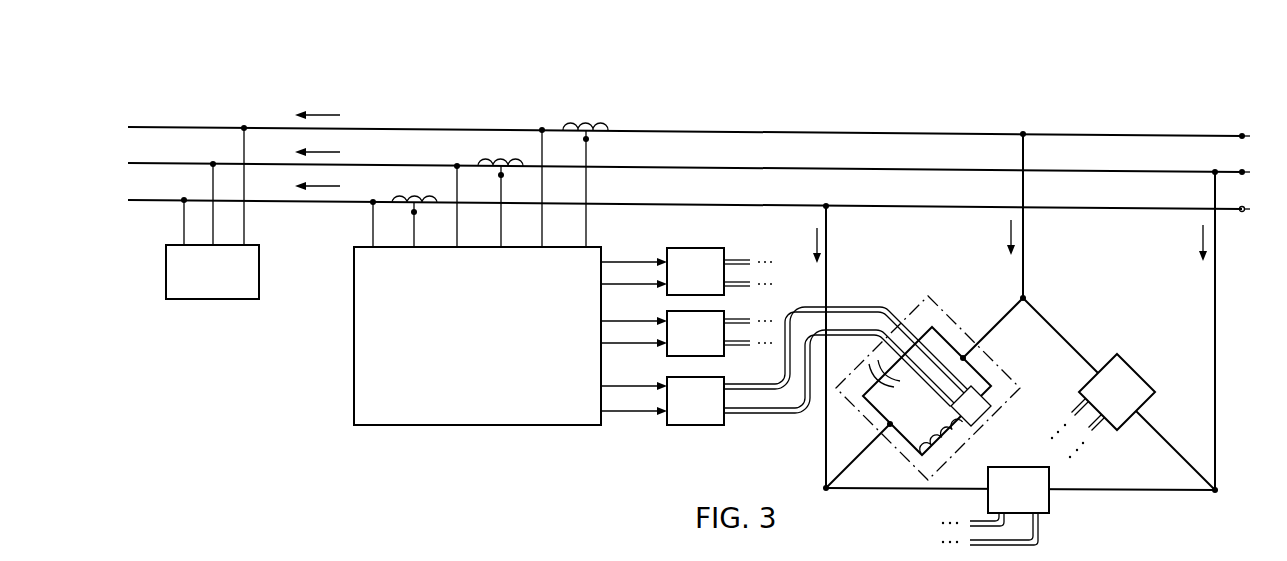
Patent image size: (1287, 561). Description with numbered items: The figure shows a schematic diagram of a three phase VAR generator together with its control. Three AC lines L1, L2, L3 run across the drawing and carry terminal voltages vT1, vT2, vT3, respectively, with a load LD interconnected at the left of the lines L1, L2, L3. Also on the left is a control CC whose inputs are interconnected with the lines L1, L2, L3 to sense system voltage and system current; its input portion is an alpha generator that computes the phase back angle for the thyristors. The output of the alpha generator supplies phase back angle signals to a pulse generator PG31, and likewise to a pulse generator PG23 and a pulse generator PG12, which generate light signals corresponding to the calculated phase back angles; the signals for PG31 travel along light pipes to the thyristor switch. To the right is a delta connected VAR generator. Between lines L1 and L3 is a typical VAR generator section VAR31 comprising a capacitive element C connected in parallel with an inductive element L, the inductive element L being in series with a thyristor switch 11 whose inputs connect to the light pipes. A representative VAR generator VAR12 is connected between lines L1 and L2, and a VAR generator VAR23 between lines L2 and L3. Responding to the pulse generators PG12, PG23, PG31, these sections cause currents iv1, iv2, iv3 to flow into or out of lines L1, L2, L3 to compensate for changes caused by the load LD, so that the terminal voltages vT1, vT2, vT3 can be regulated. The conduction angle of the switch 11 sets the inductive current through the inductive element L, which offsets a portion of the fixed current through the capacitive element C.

The AC line L1 is at (849, 134).
The AC line L2 is at (849, 170).
The AC line L3 is at (849, 207).
The load LD is at (212, 212).
The control CC is at (637, 236).
The pulse generator PG12 is at (719, 271).
The pulse generator PG23 is at (719, 333).
The pulse generator PG31 is at (695, 401).
The VAR current iv1 is at (1003, 216).
The VAR current iv2 is at (1193, 331).
The VAR current iv3 is at (804, 345).
The terminal voltage vT1 is at (1262, 134).
The terminal voltage vT2 is at (1262, 171).
The terminal voltage vT3 is at (1263, 206).
The VAR generator section VAR31 is at (928, 388).
The VAR generator VAR12 is at (1103, 406).
The VAR generator VAR23 is at (995, 506).
The capacitive element C is at (892, 376).
The inductive element L is at (938, 443).
The thyristor switch 11 is at (977, 417).